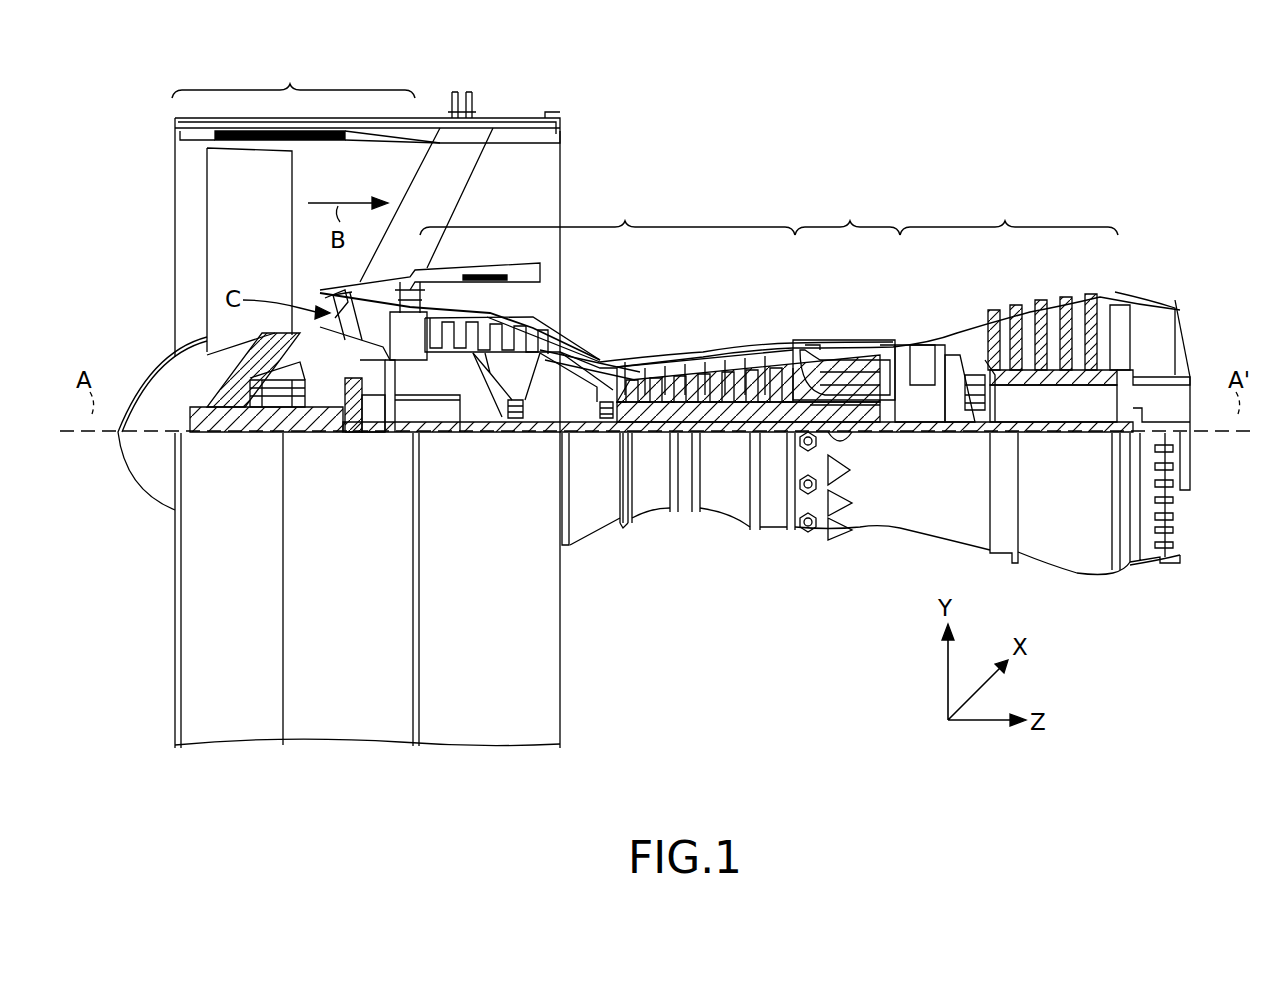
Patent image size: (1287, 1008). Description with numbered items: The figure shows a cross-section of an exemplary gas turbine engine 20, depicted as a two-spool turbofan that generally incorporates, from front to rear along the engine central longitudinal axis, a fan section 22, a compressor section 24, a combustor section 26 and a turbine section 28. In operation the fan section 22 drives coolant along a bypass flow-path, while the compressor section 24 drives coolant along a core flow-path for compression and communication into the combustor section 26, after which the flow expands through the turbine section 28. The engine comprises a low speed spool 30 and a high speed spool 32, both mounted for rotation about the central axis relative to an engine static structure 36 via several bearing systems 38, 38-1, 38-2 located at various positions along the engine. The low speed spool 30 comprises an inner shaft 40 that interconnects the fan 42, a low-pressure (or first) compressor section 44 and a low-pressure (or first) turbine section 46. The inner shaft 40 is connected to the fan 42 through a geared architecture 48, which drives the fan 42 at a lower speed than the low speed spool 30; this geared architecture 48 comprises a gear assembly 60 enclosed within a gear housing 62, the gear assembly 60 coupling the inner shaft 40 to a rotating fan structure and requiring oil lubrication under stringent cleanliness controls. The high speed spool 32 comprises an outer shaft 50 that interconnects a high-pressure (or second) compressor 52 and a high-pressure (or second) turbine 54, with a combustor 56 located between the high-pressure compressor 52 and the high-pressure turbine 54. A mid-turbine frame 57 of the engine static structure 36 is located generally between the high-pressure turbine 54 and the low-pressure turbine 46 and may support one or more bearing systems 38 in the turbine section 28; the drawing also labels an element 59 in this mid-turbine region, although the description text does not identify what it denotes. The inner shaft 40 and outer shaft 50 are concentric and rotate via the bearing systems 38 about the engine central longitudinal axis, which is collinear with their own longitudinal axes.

The gas turbine engine 20 is at (902, 150).
The fan section 22 is at (292, 94).
The compressor section 24 is at (628, 224).
The combustor section 26 is at (854, 224).
The turbine section 28 is at (1007, 224).
The low speed spool 30 is at (733, 450).
The high speed spool 32 is at (764, 400).
The engine static structure 36 is at (348, 717).
The bearing system 38 is at (958, 432).
The bearing system 38-1 is at (263, 415).
The bearing system 38-2 is at (517, 420).
The inner shaft 40 is at (583, 437).
The fan 42 is at (249, 250).
The low-pressure compressor section 44 is at (490, 330).
The low-pressure turbine section 46 is at (1053, 320).
The geared architecture 48 is at (378, 450).
The outer shaft 50 is at (848, 412).
The high-pressure compressor 52 is at (712, 395).
The high-pressure turbine 54 is at (922, 350).
The combustor 56 is at (850, 370).
The mid-turbine frame 57 is at (955, 345).
The airfoils 59 is at (975, 350).
The gear assembly 60 is at (395, 422).
The gear housing 62 is at (385, 388).